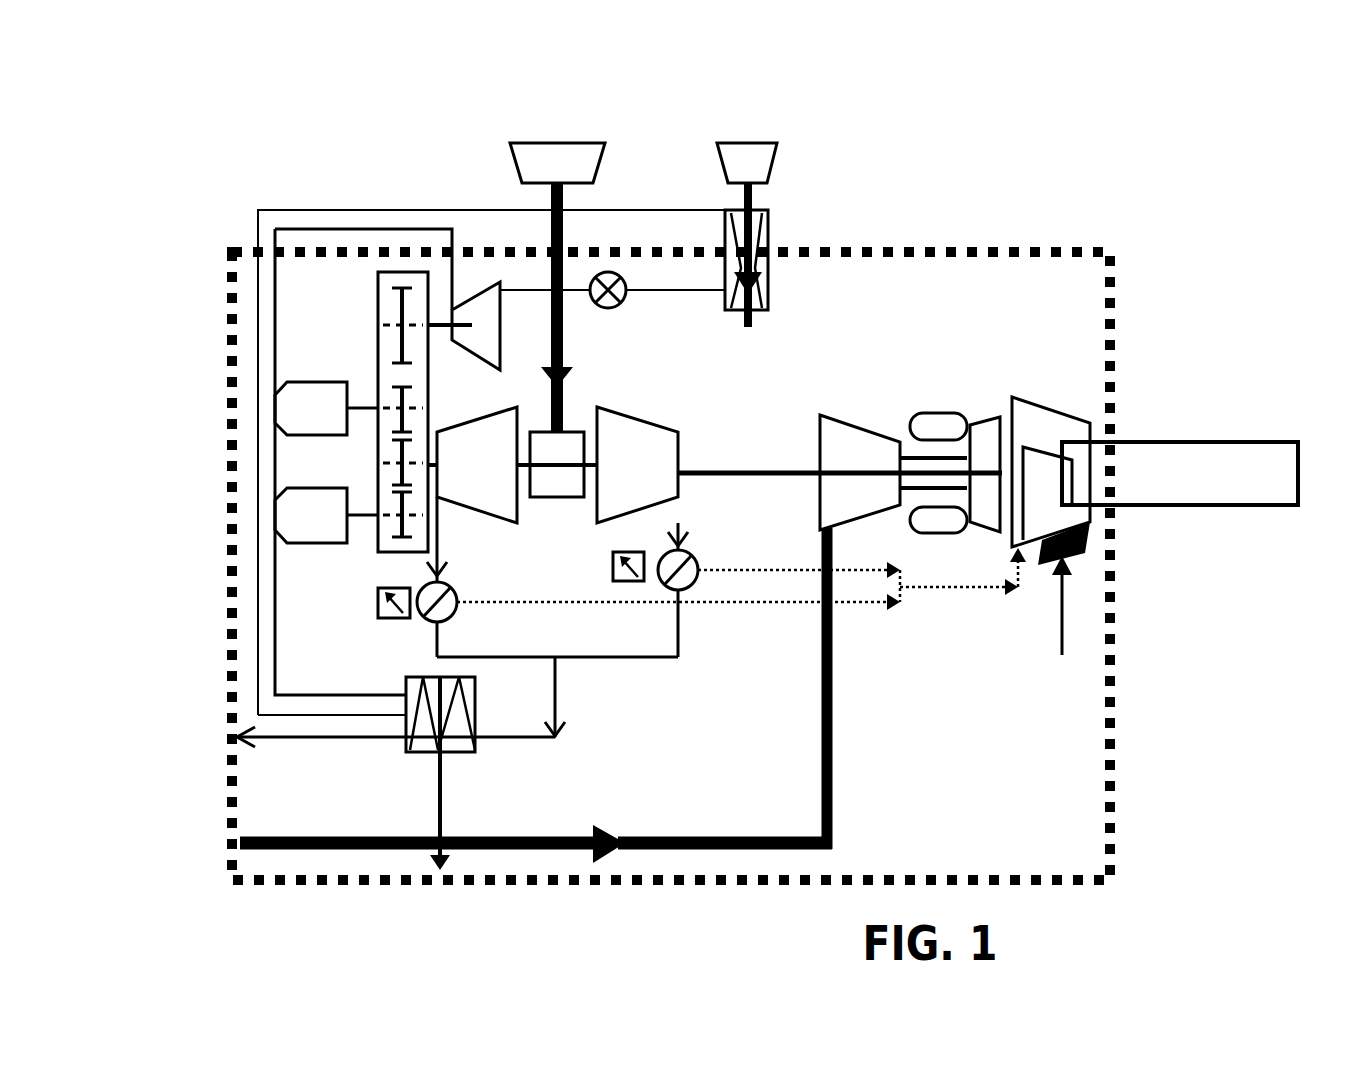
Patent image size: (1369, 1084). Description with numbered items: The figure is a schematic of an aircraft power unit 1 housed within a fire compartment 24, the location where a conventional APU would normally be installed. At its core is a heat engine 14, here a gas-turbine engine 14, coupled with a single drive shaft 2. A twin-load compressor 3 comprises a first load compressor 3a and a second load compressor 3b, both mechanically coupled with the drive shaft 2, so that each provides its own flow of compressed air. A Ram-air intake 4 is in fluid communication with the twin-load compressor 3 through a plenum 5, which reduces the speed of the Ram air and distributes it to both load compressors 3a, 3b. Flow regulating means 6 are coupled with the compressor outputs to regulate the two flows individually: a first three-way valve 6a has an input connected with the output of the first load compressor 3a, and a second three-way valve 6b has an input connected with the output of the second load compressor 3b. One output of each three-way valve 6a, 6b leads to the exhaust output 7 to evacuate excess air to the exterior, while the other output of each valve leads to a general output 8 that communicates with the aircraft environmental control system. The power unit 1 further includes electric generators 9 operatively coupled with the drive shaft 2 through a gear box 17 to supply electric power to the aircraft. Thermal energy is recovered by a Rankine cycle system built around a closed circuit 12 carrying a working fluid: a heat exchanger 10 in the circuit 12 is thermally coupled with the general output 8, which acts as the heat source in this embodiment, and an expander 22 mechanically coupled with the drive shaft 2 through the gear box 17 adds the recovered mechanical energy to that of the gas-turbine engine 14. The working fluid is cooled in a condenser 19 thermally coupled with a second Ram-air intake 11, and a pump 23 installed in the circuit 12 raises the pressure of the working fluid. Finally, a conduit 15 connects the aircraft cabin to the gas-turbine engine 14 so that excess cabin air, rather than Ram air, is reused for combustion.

The power unit 1 is at (1135, 600).
The drive shaft 2 is at (753, 470).
The twin-load compressor 3 is at (503, 385).
The first load compressor 3a is at (482, 430).
The second load compressor 3b is at (667, 443).
The Ram-air intake 4 is at (553, 160).
The plenum 5 is at (556, 493).
The flow regulating means 6 is at (645, 680).
The first three-way valve 6a is at (420, 625).
The second three-way valve 6b is at (693, 595).
The exhaust output 7 is at (1200, 467).
The general output 8 is at (288, 740).
The electric generator 9 is at (302, 415).
The heat exchanger 10 is at (418, 750).
The Ram-air intake 11 is at (750, 167).
The closed circuit 12 is at (257, 618).
The heat engine 14 is at (960, 392).
The conduit 15 is at (288, 850).
The gear box 17 is at (377, 318).
The condenser 19 is at (765, 238).
The expander 22 is at (468, 308).
The pump 23 is at (610, 280).
The fire compartment 24 is at (1110, 732).